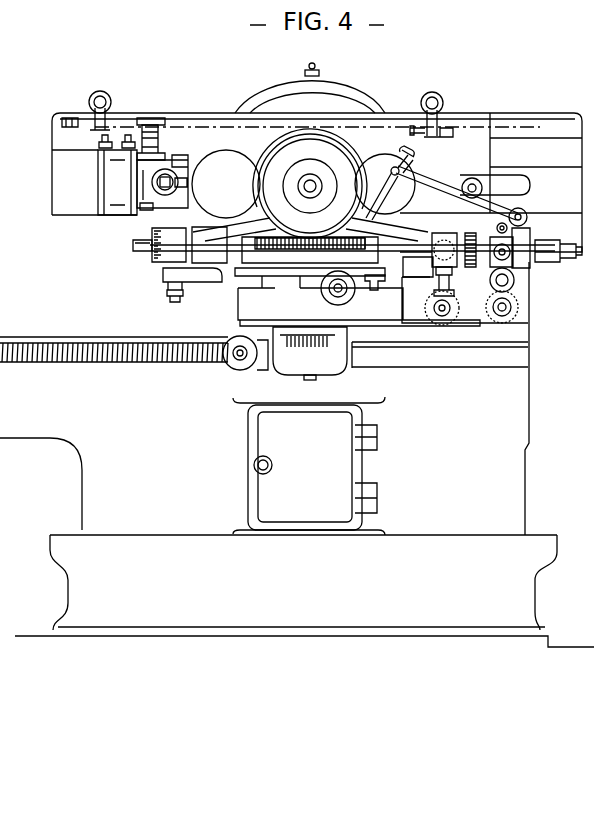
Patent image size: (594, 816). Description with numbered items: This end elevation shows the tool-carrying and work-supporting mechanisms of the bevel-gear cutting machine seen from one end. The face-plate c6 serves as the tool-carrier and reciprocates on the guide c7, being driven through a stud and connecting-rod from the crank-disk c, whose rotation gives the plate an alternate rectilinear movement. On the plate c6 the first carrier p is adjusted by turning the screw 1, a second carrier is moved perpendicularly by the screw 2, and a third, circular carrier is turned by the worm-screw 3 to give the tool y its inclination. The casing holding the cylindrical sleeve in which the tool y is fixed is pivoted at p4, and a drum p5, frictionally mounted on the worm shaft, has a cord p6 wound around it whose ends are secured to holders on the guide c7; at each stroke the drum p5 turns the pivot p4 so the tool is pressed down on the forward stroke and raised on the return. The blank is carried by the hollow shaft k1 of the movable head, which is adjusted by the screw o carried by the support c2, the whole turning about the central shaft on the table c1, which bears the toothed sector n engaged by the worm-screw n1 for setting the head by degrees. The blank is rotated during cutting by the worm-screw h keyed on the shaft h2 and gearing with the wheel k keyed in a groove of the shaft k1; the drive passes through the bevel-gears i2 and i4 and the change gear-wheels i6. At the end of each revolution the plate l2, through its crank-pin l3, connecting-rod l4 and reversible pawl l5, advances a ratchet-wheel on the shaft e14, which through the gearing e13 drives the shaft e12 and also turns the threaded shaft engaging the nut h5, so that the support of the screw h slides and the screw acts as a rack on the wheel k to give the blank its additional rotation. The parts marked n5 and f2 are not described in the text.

The screw 1 is at (90, 138).
The screw 2 is at (106, 134).
The worm-screw 3 is at (129, 134).
The first carrier p is at (117, 182).
The pivot p4 is at (142, 120).
The drum p5 is at (163, 122).
The cord p6 is at (372, 125).
The tool y is at (153, 205).
The worm-wheel k is at (350, 206).
The shaft k1 is at (312, 182).
The plate l2 is at (382, 196).
The crank-pin l3 is at (392, 167).
The connecting-rod l4 is at (448, 190).
The pawl l5 is at (474, 200).
The plate c6 is at (465, 163).
The guide c7 is at (536, 175).
The worm-screw h is at (310, 251).
The shaft h2 is at (375, 273).
The nut h5 is at (513, 254).
The crank-disk c is at (297, 268).
The screw o is at (333, 290).
The support c2 is at (383, 308).
The worm-screw n1 is at (310, 351).
The toothed sector n is at (115, 342).
The pinion n5 is at (231, 365).
The intermediate bevel-gear i4 is at (440, 236).
The bevel-gear i2 is at (458, 273).
The clamp screw f2 is at (456, 285).
The set of gear-wheels i6 is at (442, 314).
The shaft e14 is at (510, 264).
The intermediate gearing e13 is at (519, 310).
The shaft e12 is at (507, 313).
The table c1 is at (297, 539).